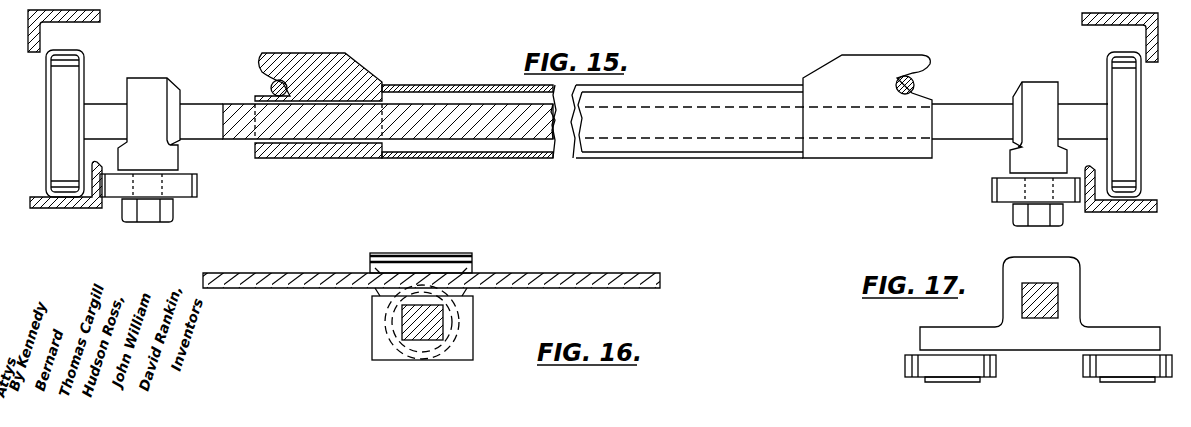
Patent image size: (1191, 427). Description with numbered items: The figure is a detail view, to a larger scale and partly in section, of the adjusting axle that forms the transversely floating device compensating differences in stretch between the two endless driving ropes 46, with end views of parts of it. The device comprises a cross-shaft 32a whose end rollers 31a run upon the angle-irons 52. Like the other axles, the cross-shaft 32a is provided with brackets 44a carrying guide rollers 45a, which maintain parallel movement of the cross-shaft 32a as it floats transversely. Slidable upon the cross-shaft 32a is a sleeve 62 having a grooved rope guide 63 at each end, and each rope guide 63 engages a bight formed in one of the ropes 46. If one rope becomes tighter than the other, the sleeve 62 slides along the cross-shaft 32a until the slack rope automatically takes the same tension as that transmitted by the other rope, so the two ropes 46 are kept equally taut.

In FIG. 15, the end roller 31a is at (60, 118).
In FIG. 15, the cross-shaft 32a is at (497, 130).
In FIG. 16, the cross-shaft 32a is at (440, 322).
In FIG. 17, the cross-shaft 32a is at (1025, 290).
In FIG. 15, the bracket 44a is at (152, 85).
In FIG. 17, the bracket 44a is at (1068, 283).
In FIG. 15, the guide roller 45a is at (185, 187).
In FIG. 17, the guide roller 45a is at (920, 366).
In FIG. 15, the endless driving rope 46 is at (270, 89).
In FIG. 16, the endless driving rope 46 is at (548, 282).
In FIG. 15, the angle-iron 52 is at (62, 208).
In FIG. 15, the sleeve 62 is at (704, 135).
In FIG. 15, the grooved rope guide 63 is at (330, 68).
In FIG. 16, the grooved rope guide 63 is at (420, 258).